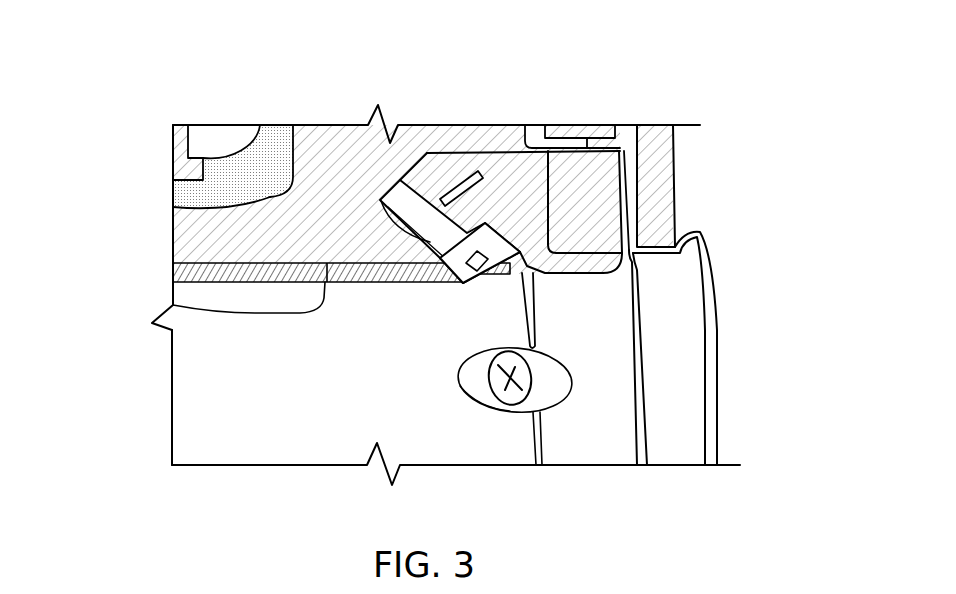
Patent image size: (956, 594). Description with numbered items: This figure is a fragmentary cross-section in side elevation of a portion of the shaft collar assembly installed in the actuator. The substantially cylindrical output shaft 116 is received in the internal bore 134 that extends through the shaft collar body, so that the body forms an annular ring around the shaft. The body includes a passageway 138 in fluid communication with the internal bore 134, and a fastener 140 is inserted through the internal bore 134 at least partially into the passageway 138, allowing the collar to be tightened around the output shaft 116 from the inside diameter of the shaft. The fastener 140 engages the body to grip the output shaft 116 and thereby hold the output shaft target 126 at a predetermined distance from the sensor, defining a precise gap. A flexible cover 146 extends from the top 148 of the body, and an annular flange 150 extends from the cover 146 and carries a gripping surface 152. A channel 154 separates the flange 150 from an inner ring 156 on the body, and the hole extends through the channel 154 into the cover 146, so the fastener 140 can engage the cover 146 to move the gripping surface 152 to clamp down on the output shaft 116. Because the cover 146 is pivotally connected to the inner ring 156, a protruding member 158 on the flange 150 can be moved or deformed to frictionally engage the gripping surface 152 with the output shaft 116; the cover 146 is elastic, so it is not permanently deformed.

The output shaft 116 is at (262, 433).
The output shaft target 126 is at (590, 178).
The internal bore 134 is at (183, 373).
The passageway 138 is at (507, 257).
The fastener 140 is at (380, 199).
The flexible cover 146 is at (456, 160).
The top 148 is at (500, 163).
The annular flange 150 is at (340, 238).
The gripping surface 152 is at (190, 305).
The channel 154 is at (443, 197).
The inner ring 156 is at (405, 255).
The protruding member 158 is at (268, 255).